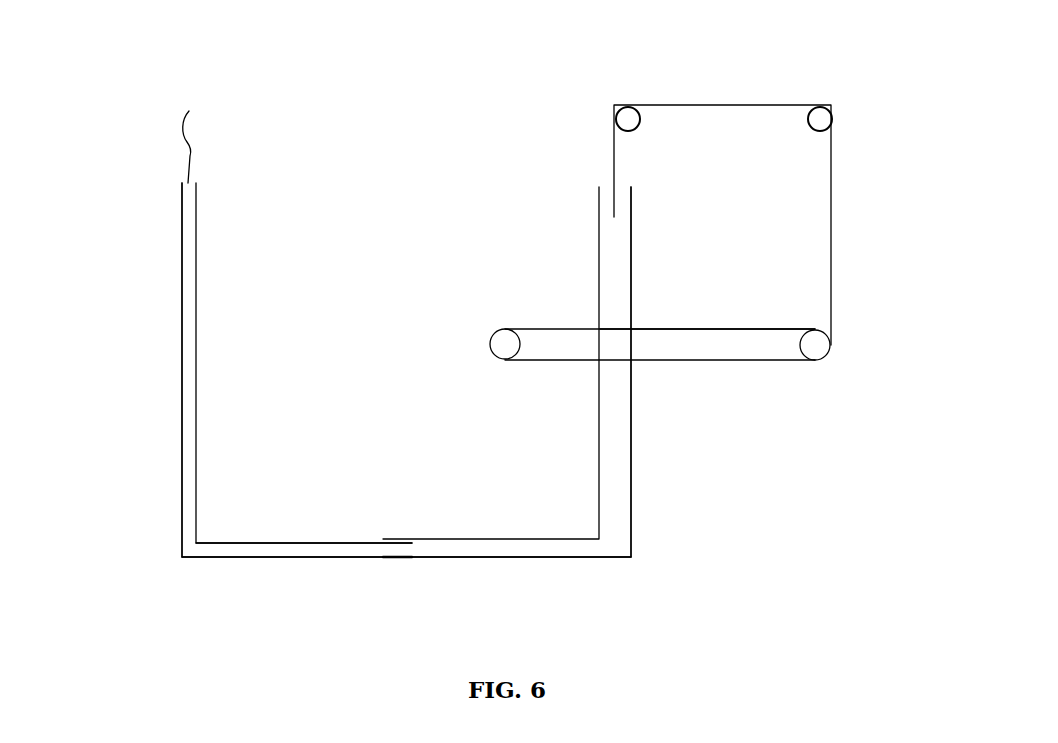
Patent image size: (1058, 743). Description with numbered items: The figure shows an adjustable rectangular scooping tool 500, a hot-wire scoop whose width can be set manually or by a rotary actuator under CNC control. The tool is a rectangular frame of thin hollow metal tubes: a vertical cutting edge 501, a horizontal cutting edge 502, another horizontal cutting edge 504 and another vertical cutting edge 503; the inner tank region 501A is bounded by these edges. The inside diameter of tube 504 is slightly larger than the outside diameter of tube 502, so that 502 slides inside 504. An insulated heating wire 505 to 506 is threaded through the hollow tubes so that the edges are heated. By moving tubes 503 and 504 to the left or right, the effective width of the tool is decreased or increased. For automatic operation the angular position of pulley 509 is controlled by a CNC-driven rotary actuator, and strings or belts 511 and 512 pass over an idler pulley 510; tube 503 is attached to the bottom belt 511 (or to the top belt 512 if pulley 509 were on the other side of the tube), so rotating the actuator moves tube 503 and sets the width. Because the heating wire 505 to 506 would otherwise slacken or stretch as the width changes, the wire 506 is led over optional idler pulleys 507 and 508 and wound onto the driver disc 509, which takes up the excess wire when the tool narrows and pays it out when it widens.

The system 500 is at (406, 370).
The vertical cutting edge 501 is at (175, 321).
The inner tank 501A is at (309, 483).
The horizontal cutting edge 502 is at (261, 561).
The vertical cutting edge 503 is at (640, 495).
The horizontal cutting edge 504 is at (532, 568).
The insulated heating wire 505 is at (200, 138).
The insulated heating wire 506 is at (622, 153).
The idler pulley 507 is at (633, 95).
The idler pulley 508 is at (825, 95).
The pulley / driver disc 509 is at (833, 341).
The idler pulley 510 is at (520, 344).
The bottom belt 511 is at (745, 367).
The top belt 512 is at (745, 320).